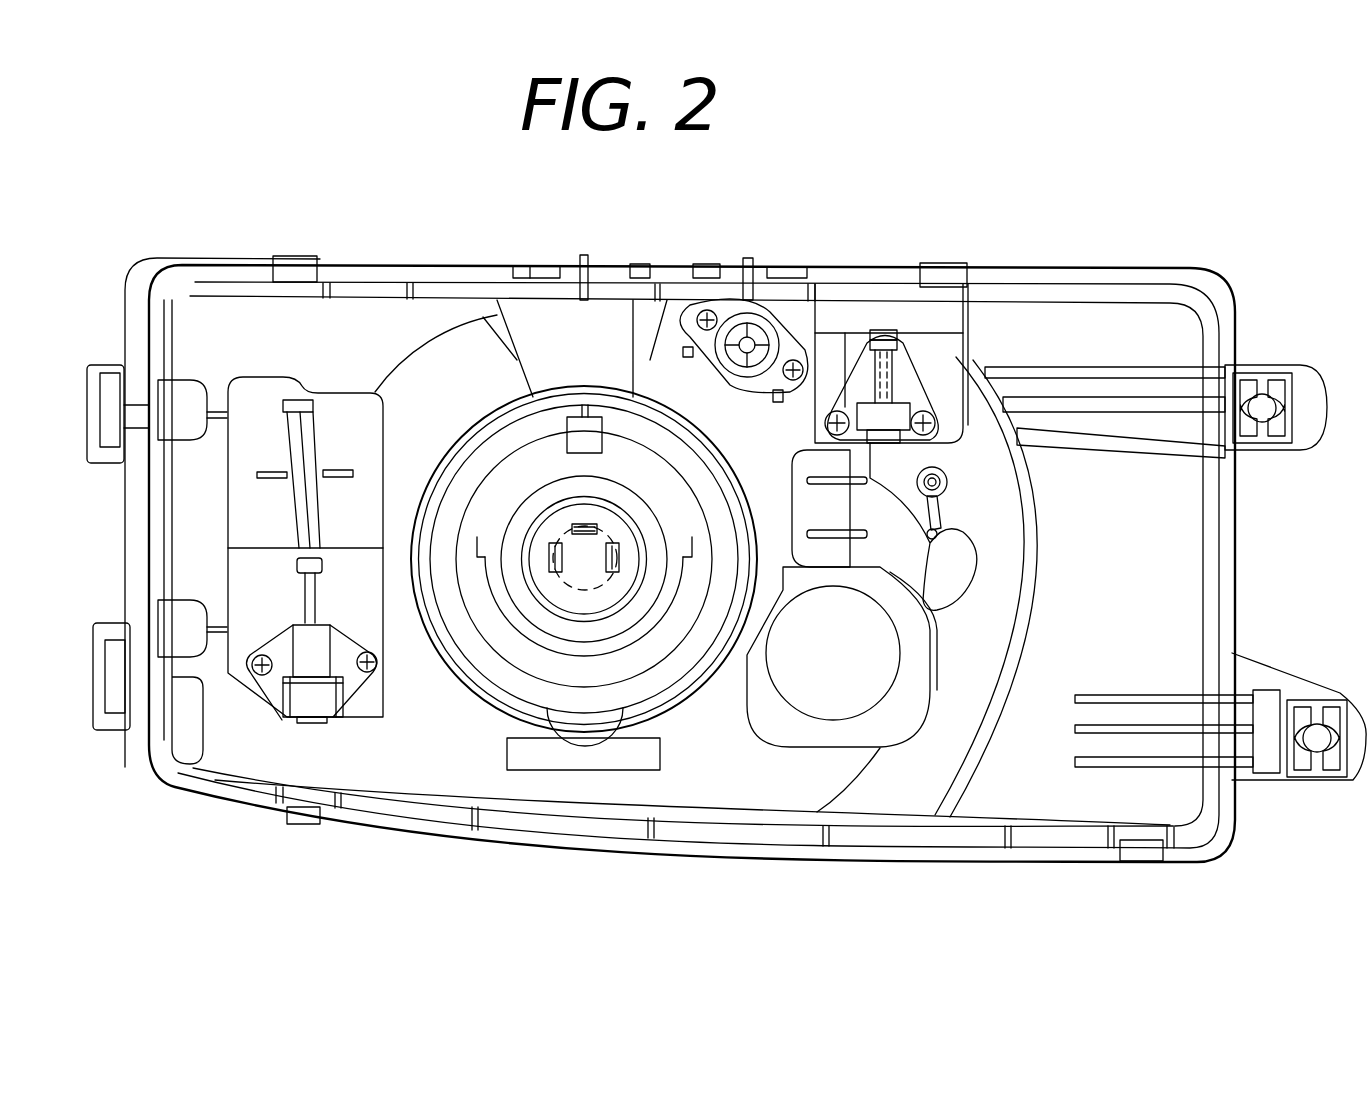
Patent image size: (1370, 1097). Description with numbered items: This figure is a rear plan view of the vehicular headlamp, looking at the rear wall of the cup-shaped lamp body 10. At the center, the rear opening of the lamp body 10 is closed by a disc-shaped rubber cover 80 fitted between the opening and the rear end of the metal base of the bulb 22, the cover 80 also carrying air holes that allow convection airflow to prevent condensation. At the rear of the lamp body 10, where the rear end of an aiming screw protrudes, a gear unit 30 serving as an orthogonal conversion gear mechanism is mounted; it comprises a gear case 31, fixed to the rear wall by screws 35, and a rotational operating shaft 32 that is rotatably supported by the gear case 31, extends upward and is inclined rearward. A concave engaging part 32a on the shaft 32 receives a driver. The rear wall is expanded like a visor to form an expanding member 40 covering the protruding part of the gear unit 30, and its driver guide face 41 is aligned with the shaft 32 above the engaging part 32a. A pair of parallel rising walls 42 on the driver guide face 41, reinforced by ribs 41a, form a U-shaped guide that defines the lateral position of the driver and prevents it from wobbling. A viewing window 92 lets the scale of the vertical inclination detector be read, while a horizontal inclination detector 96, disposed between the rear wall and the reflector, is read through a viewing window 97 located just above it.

The lamp body 10 is at (455, 372).
The bulb 22 is at (578, 590).
The gear unit 30 is at (282, 724).
The gear case 31 is at (313, 693).
The rotational operating shaft 32 is at (307, 603).
The concave engaging part 32a is at (300, 542).
The screws 35 is at (282, 712).
The expanding member 40 is at (255, 393).
The driver guide face 41 is at (273, 392).
The ribs 41a is at (342, 470).
The rising walls 42 is at (300, 433).
The cover 80 is at (650, 682).
The viewing window 92 is at (571, 266).
The horizontal inclination detector 96 is at (745, 313).
The viewing window 97 is at (780, 268).